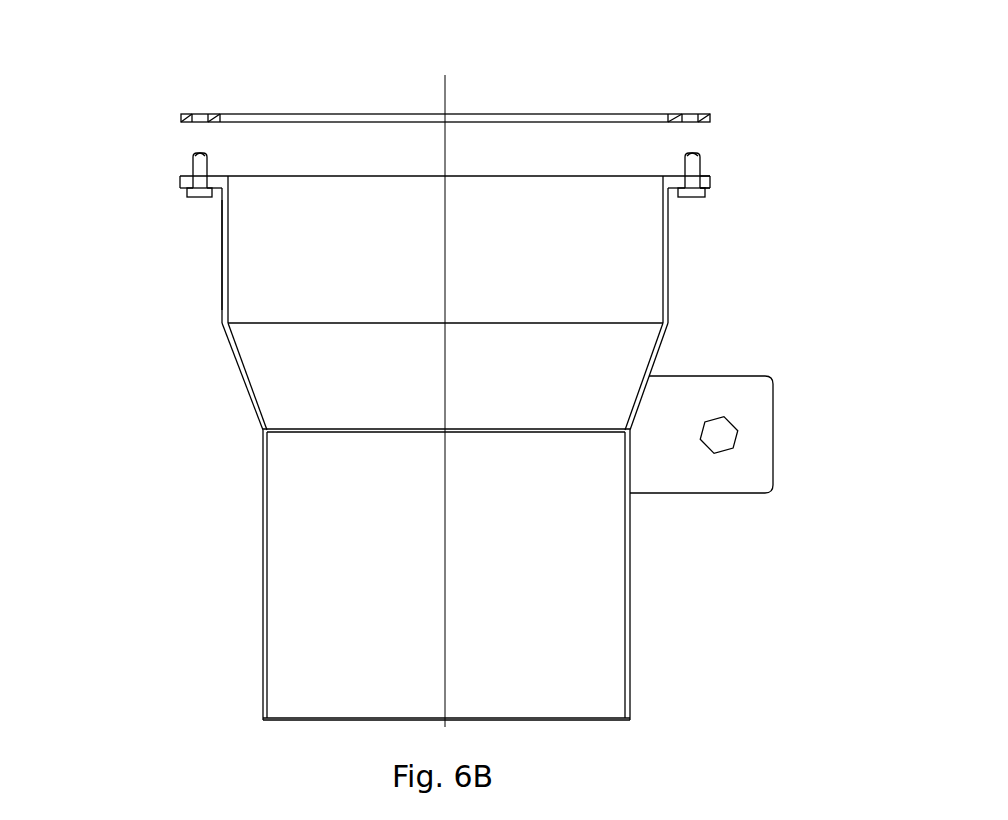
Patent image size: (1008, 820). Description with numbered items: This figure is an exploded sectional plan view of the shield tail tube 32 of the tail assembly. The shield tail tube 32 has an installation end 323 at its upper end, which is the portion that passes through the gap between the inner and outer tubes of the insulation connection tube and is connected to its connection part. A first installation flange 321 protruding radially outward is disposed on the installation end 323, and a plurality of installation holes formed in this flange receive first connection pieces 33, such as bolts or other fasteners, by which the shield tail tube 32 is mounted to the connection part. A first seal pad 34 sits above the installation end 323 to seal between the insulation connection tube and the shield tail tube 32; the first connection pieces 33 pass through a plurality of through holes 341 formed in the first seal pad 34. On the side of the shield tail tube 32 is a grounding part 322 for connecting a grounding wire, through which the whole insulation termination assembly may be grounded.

The shield tail tube 32 is at (215, 523).
The first installation flange 321 is at (708, 181).
The grounding part 322 is at (725, 488).
The installation end 323 is at (223, 235).
The first connection pieces 33 is at (197, 170).
The first seal pad 34 is at (575, 116).
The through holes 341 is at (697, 115).